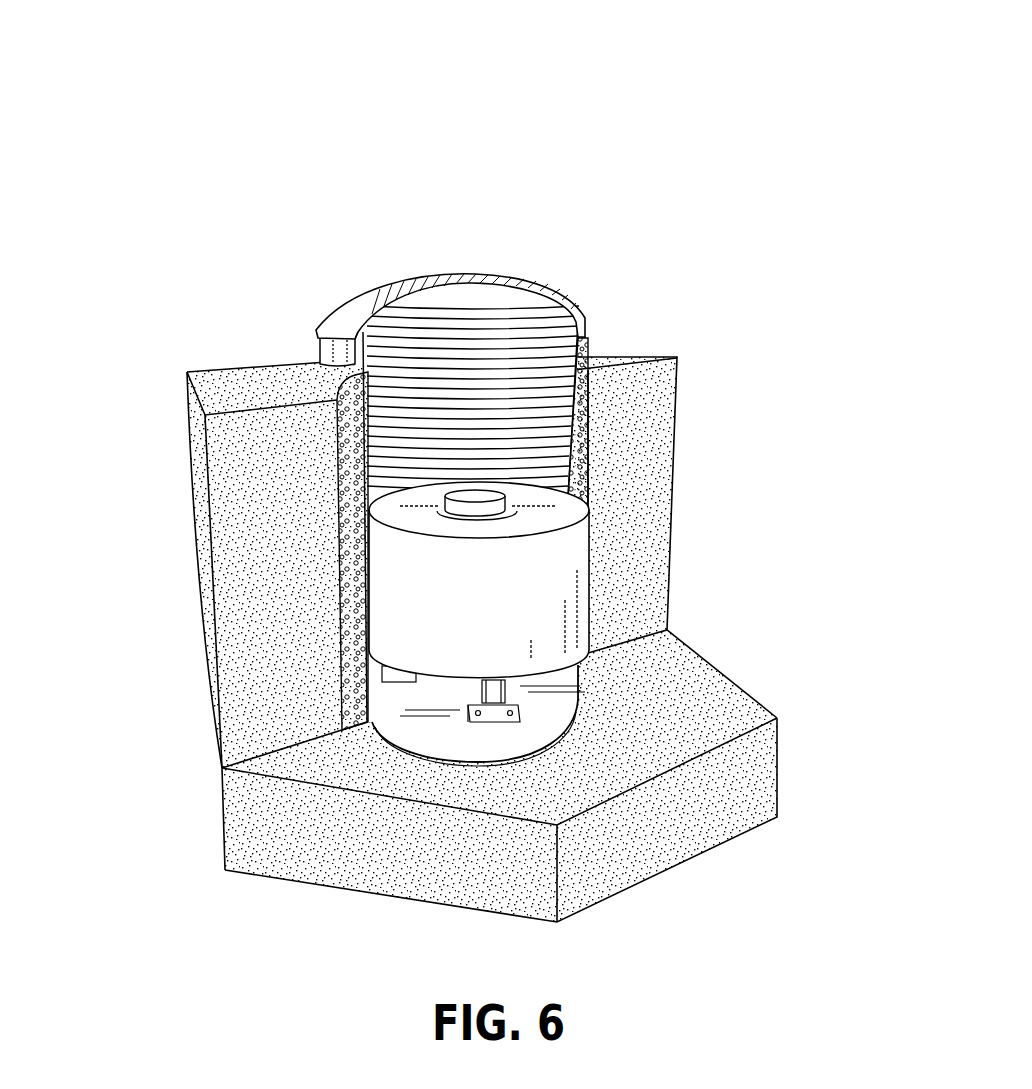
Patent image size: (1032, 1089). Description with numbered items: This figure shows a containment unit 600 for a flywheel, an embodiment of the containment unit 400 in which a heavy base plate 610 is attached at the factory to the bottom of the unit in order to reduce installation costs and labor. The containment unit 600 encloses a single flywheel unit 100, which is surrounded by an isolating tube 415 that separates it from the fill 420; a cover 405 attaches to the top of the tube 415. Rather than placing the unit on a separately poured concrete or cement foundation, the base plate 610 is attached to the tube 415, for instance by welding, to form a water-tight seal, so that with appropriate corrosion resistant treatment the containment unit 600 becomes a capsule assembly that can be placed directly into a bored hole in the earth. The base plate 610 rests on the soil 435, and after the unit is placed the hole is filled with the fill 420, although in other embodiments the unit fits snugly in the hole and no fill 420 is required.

The containment unit 600 is at (503, 56).
The containment unit 400 is at (540, 238).
The cover 405 is at (338, 300).
The isolating tube 415 is at (312, 348).
The fill 420 is at (343, 455).
The soil 435 is at (245, 546).
The flywheel unit 100 is at (556, 510).
The base plate 610 is at (568, 696).